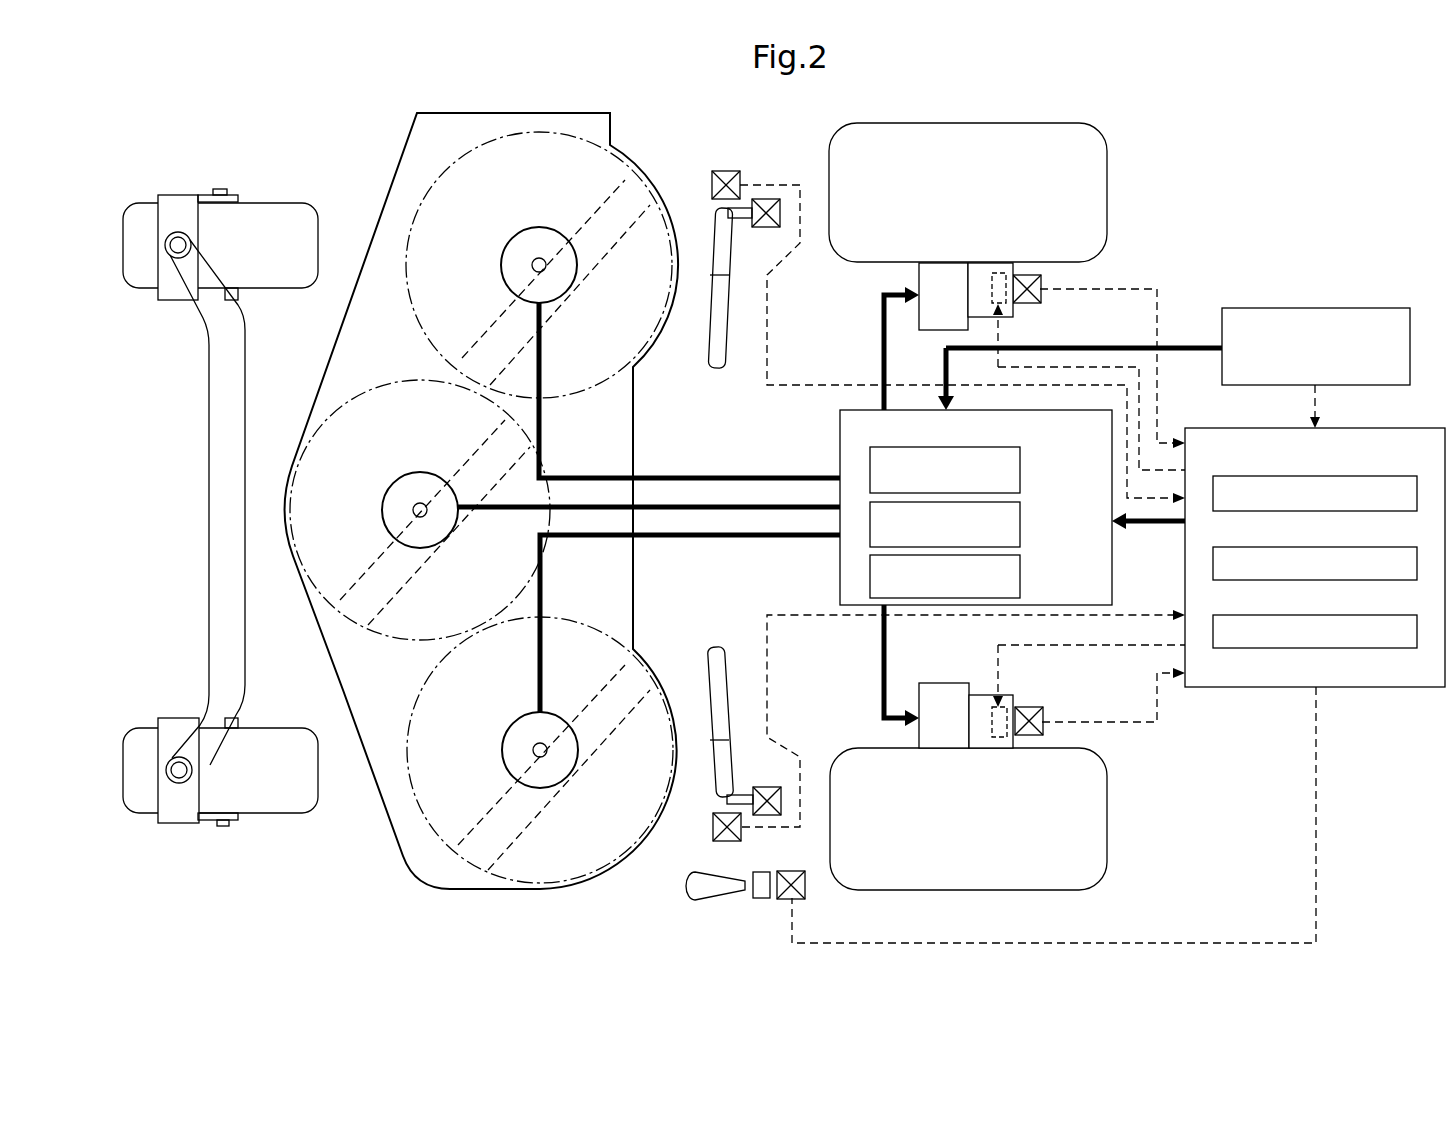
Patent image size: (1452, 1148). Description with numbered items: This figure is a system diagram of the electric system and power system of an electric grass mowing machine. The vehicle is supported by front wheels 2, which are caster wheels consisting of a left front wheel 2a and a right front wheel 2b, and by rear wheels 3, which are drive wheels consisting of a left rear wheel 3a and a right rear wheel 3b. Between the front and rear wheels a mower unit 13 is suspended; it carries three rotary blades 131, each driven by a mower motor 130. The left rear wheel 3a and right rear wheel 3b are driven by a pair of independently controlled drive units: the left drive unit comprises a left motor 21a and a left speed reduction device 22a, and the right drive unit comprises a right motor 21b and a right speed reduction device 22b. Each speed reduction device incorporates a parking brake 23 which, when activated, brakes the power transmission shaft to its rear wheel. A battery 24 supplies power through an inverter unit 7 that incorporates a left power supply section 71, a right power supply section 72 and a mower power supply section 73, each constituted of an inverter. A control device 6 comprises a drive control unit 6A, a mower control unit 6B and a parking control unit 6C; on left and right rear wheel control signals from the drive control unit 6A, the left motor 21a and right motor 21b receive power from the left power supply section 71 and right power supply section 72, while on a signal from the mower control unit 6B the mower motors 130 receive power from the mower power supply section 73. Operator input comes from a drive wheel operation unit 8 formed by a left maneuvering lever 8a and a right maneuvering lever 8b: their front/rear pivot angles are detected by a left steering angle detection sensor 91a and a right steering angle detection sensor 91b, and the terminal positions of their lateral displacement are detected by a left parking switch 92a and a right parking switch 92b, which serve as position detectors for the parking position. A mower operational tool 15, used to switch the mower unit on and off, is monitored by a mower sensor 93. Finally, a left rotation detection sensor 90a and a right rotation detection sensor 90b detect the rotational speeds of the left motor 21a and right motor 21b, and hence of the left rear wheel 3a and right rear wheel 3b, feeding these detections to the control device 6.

The front wheels 2 is at (220, 506).
The left front wheel 2a is at (258, 800).
The right front wheel 2b is at (248, 216).
The rear wheels 3 is at (1019, 506).
The left rear wheel 3a is at (1092, 850).
The right rear wheel 3b is at (1092, 168).
The control device 6 is at (1315, 595).
The drive control unit 6A is at (1367, 512).
The mower control unit 6B is at (1367, 581).
The parking control unit 6C is at (1367, 649).
The inverter unit 7 is at (947, 499).
The left power supply section 71 is at (1020, 466).
The right power supply section 72 is at (1020, 521).
The mower power supply section 73 is at (1020, 573).
The drive wheel operation unit 8 is at (777, 506).
The left maneuvering lever 8a is at (722, 688).
The right maneuvering lever 8b is at (722, 335).
The mower unit 13 is at (388, 189).
The mower motor 130 is at (537, 227).
The rotary blade 131 is at (467, 307).
The mower operational tool 15 is at (693, 887).
The left motor 21a is at (929, 742).
The right motor 21b is at (929, 272).
The left speed reduction device 22a is at (977, 742).
The right speed reduction device 22b is at (977, 270).
The parking brake 23 is at (1000, 275).
The battery 24 is at (1317, 306).
The left rotation detection sensor 90a is at (1035, 708).
The right rotation detection sensor 90b is at (1035, 304).
The left steering angle detection sensor 91a is at (770, 815).
The right steering angle detection sensor 91b is at (766, 198).
The left parking switch 92a is at (712, 830).
The right parking switch 92b is at (712, 180).
The mower sensor 93 is at (777, 898).